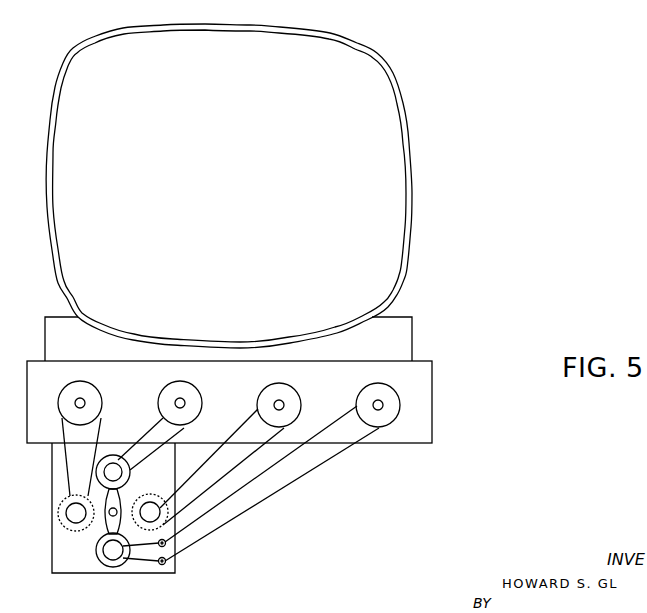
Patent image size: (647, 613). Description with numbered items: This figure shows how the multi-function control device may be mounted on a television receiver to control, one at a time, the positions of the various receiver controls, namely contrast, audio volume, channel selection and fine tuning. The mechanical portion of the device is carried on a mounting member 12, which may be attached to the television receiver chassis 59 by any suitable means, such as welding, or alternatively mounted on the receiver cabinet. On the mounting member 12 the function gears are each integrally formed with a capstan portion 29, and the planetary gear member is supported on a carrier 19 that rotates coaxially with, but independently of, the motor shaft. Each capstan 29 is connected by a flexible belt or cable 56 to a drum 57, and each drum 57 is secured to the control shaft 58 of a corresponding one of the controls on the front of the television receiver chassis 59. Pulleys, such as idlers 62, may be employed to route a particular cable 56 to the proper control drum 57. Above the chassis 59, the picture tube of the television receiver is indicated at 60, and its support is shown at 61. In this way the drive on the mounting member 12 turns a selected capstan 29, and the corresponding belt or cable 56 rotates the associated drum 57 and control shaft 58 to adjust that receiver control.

The picture tube 60 is at (397, 152).
The support 61 is at (397, 318).
The television receiver chassis 59 is at (432, 390).
The control shaft 58 is at (85, 399).
The drum 57 is at (102, 406).
The flexible belt or cable 56 is at (63, 470).
The mounting member 12 is at (63, 567).
The capstan portion 29 is at (73, 517).
The carrier 19 is at (103, 525).
The idlers 62 is at (161, 547).